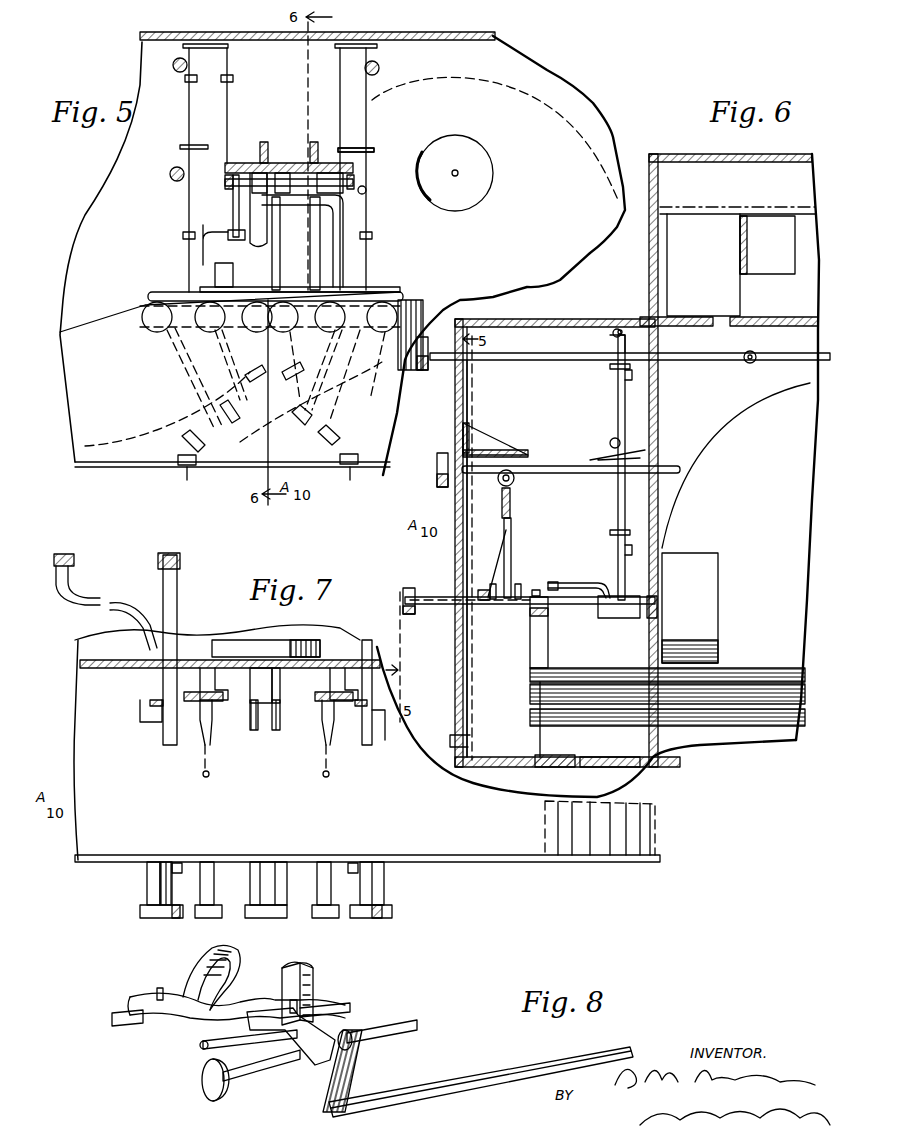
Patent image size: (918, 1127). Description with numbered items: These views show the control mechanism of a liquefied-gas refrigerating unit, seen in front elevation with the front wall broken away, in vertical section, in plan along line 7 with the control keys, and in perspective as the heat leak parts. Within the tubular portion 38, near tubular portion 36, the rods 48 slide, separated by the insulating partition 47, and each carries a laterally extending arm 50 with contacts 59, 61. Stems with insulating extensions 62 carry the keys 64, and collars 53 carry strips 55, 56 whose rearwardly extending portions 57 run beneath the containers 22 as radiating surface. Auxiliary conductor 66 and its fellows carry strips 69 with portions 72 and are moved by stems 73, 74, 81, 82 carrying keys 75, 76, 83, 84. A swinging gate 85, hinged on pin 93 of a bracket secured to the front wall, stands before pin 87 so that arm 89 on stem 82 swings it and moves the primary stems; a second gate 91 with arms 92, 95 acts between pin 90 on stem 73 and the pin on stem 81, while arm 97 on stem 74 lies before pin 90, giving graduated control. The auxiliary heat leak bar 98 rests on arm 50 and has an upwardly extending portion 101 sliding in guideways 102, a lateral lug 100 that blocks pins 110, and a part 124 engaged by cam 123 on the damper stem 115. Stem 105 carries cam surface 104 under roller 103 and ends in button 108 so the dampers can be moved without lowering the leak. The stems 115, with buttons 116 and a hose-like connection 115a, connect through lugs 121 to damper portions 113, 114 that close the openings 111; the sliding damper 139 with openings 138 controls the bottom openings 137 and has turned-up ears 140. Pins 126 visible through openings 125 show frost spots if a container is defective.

In FIG. 5, the section line 7— 7 is at (452, 315).
In FIG. 6, the section line 7— 7 is at (830, 325).
In FIG. 5, the container 22 is at (326, 438).
In FIG. 6, the container 22 is at (732, 420).
In FIG. 6, the cylinder 36 is at (647, 628).
In FIG. 6, the tubular portion 38 is at (610, 618).
In FIG. 6, the partition 47 is at (610, 590).
In FIG. 7, the rod 48 is at (250, 712).
In FIG. 5, the laterally extending arm 50 is at (165, 285).
In FIG. 6, the collar 53 is at (532, 614).
In FIG. 5, the strip 55 is at (273, 383).
In FIG. 5, the strip 56 is at (232, 365).
In FIG. 6, the strip 56 is at (530, 640).
In FIG. 5, the rearwardly extending portion 57 is at (266, 419).
In FIG. 6, the rearwardly extending portion 57 is at (530, 662).
In FIG. 7, the contact 59 is at (384, 736).
In FIG. 7, the contact 61 is at (140, 708).
In FIG. 8, the extension 62 is at (138, 1026).
In FIG. 5, the key 64 is at (255, 331).
In FIG. 6, the key 64 is at (410, 590).
In FIG. 7, the key 64 is at (268, 918).
In FIG. 8, the auxiliary conductor 66 is at (395, 1026).
In FIG. 5, the strip 69 is at (205, 380).
In FIG. 6, the strip 69 is at (530, 680).
In FIG. 8, the strip 69 is at (350, 1078).
In FIG. 5, the rearwardly extending portion 72 is at (342, 458).
In FIG. 6, the rearwardly extending portion 72 is at (530, 710).
In FIG. 8, the rearwardly extending portion 72 is at (445, 1080).
In FIG. 7, the stem 73 is at (331, 898).
In FIG. 8, the stem 73 is at (336, 1003).
In FIG. 7, the stem 74 is at (384, 898).
In FIG. 8, the stem 74 is at (277, 1068).
In FIG. 5, the key 75 is at (332, 332).
In FIG. 7, the key 75 is at (330, 918).
In FIG. 5, the key 76 is at (405, 300).
In FIG. 7, the key 76 is at (392, 914).
In FIG. 8, the key 76 is at (204, 1085).
In FIG. 7, the stem 81 is at (214, 886).
In FIG. 7, the stem 82 is at (147, 884).
In FIG. 5, the key 83 is at (207, 331).
In FIG. 7, the key 83 is at (200, 918).
In FIG. 5, the key 84 is at (150, 330).
In FIG. 7, the key 84 is at (150, 918).
In FIG. 5, the swinging gate 85 is at (233, 215).
In FIG. 8, the pin 87 is at (160, 988).
In FIG. 5, the arm 89 is at (203, 240).
In FIG. 8, the pin 90 is at (314, 988).
In FIG. 5, the swinging gate 91 is at (345, 268).
In FIG. 6, the swinging gate 91 is at (512, 552).
In FIG. 8, the swinging gate 91 is at (302, 962).
In FIG. 8, the arm 92 is at (200, 1044).
In FIG. 5, the pin 93 is at (366, 190).
In FIG. 6, the pin 93 is at (514, 484).
In FIG. 5, the arm 95 is at (248, 290).
In FIG. 6, the arm 95 is at (484, 585).
In FIG. 8, the arm 95 is at (188, 992).
In FIG. 5, the arm 97 is at (355, 285).
In FIG. 8, the arm 97 is at (272, 1008).
In FIG. 6, the bar 98 is at (664, 556).
In FIG. 6, the lateral lug 100 is at (552, 582).
In FIG. 7, the lateral lug 100 is at (204, 730).
In FIG. 5, the upwardly extending portion 101 is at (228, 100).
In FIG. 7, the upwardly extending portion 101 is at (215, 690).
In FIG. 5, the guideway 102 is at (184, 78).
In FIG. 6, the guideway 102 is at (612, 372).
In FIG. 7, the guideway 102 is at (200, 690).
In FIG. 6, the roller 103 is at (622, 440).
In FIG. 6, the cam surface 104 is at (606, 456).
In FIG. 5, the stem 105 is at (170, 174).
In FIG. 6, the stem 105 is at (570, 472).
In FIG. 6, the button 108 is at (440, 486).
In FIG. 7, the button 108 is at (178, 862).
In FIG. 6, the pin 110 is at (536, 590).
In FIG. 7, the pin 110 is at (203, 778).
In FIG. 6, the opening 111 is at (748, 272).
In FIG. 6, the damper portion 113 is at (770, 360).
In FIG. 6, the damper portion 114 is at (740, 300).
In FIG. 5, the stem 115 is at (172, 66).
In FIG. 6, the stem 115 is at (548, 365).
In FIG. 7, the stem 115 is at (177, 608).
In FIG. 7, the hose 115a is at (92, 606).
In FIG. 6, the button 116 is at (424, 370).
In FIG. 7, the button 116 is at (176, 920).
In FIG. 6, the lug 121 is at (748, 353).
In FIG. 7, the lug 121 is at (74, 557).
In FIG. 6, the cam 123 is at (612, 335).
In FIG. 5, the part 124 is at (200, 48).
In FIG. 6, the part 124 is at (618, 330).
In FIG. 7, the part 124 is at (150, 706).
In FIG. 5, the opening 125 is at (488, 195).
In FIG. 5, the pin 126 is at (458, 176).
In FIG. 6, the opening 137 is at (600, 766).
In FIG. 6, the opening 138 is at (590, 756).
In FIG. 6, the sliding damper 139 is at (490, 762).
In FIG. 5, the turned-up ear 140 is at (269, 482).
In FIG. 6, the turned-up ear 140 is at (471, 739).